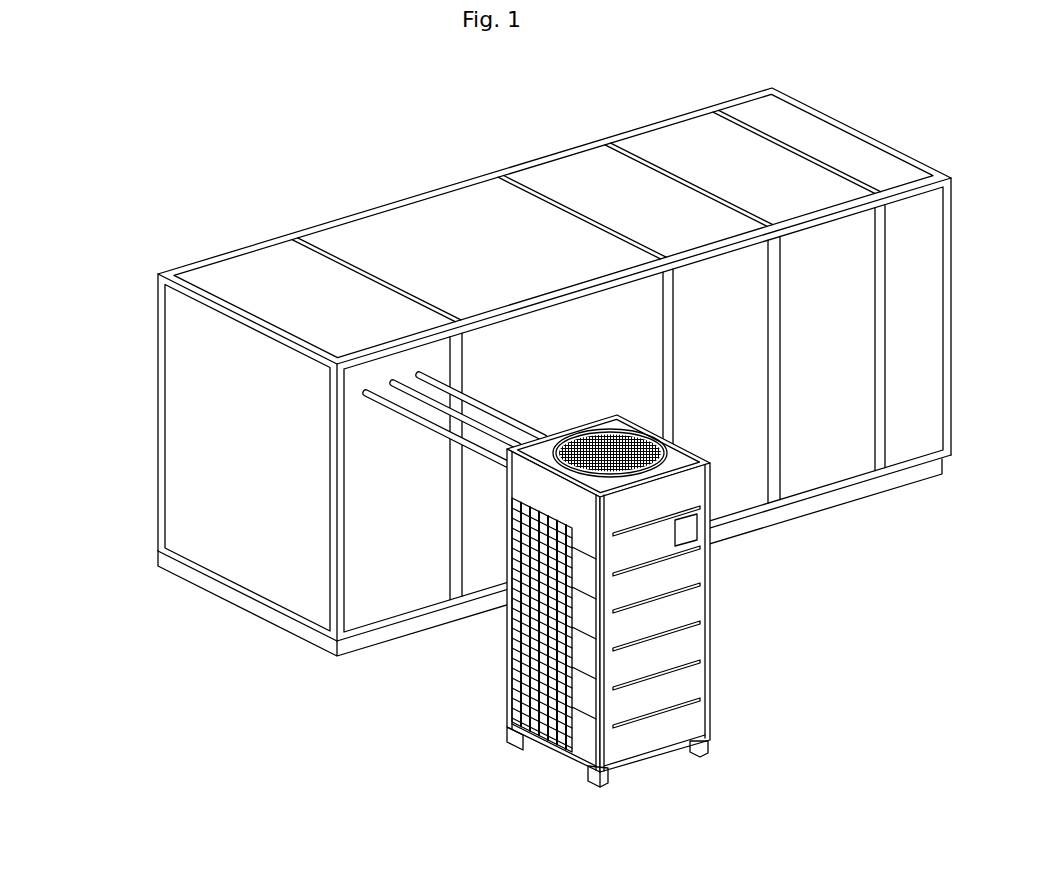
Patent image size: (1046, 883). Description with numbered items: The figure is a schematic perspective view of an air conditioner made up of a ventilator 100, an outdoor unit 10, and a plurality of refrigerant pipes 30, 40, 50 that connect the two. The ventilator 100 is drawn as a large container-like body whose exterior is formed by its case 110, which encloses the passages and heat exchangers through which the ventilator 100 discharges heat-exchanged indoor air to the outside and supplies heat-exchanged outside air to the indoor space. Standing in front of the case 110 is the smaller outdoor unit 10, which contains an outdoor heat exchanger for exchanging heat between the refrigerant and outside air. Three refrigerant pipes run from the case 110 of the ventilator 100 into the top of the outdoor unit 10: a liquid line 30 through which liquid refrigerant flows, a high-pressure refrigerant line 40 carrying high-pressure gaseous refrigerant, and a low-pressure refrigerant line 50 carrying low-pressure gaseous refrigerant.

The ventilator 100 is at (531, 373).
The case 110 is at (260, 553).
The outdoor unit 10 is at (735, 691).
The liquid line 30 is at (427, 422).
The high-pressure refrigerant line 40 is at (427, 398).
The low-pressure refrigerant line 50 is at (487, 407).